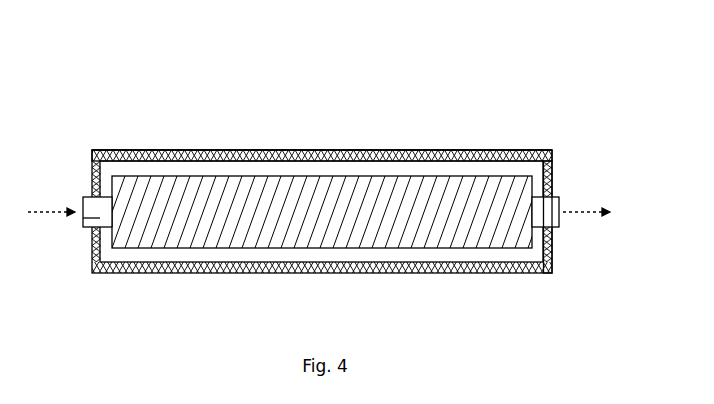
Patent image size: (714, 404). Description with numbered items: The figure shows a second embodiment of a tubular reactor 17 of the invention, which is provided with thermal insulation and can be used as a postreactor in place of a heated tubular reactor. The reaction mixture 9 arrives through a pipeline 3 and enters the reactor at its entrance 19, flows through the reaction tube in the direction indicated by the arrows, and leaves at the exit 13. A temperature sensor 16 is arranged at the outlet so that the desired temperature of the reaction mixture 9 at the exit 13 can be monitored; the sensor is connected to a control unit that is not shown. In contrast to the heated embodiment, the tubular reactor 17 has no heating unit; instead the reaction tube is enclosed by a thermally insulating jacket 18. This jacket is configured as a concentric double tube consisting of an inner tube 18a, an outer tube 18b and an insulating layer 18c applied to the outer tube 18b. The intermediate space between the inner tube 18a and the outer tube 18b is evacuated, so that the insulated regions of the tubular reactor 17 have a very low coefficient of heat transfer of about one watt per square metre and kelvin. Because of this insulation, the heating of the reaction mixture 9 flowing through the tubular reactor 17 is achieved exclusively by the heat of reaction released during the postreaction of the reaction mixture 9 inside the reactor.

The pipeline 3 is at (88, 197).
The reaction mixture 9 is at (268, 232).
The exit 13 is at (547, 273).
The temperature sensor 16 is at (527, 193).
The tubular reactor 17 is at (491, 118).
The thermally insulating jacket 18 is at (192, 168).
The inner tube 18a is at (328, 173).
The outer tube 18b is at (280, 158).
The insulating layer 18c is at (392, 152).
The entrance 19 is at (88, 218).